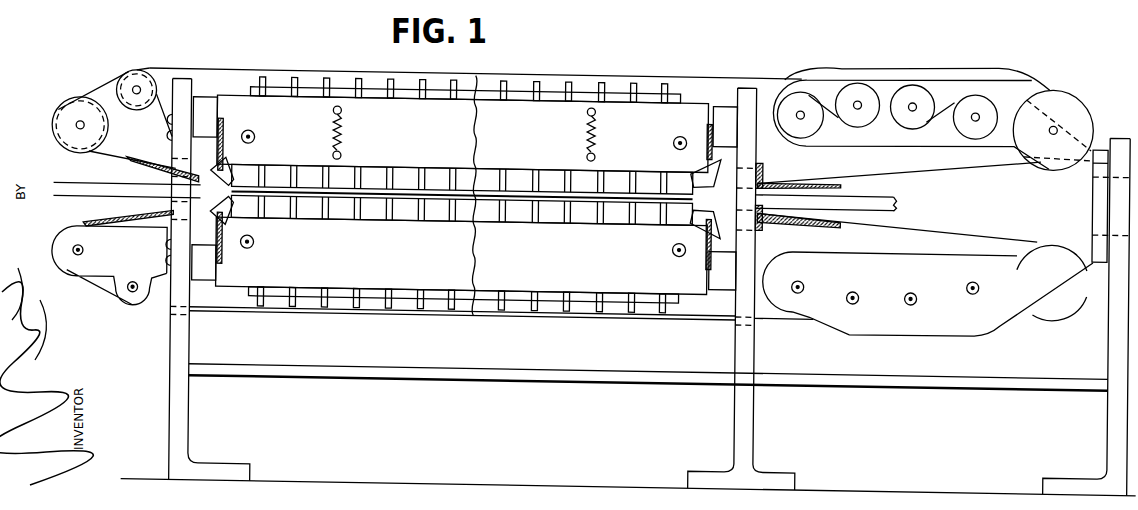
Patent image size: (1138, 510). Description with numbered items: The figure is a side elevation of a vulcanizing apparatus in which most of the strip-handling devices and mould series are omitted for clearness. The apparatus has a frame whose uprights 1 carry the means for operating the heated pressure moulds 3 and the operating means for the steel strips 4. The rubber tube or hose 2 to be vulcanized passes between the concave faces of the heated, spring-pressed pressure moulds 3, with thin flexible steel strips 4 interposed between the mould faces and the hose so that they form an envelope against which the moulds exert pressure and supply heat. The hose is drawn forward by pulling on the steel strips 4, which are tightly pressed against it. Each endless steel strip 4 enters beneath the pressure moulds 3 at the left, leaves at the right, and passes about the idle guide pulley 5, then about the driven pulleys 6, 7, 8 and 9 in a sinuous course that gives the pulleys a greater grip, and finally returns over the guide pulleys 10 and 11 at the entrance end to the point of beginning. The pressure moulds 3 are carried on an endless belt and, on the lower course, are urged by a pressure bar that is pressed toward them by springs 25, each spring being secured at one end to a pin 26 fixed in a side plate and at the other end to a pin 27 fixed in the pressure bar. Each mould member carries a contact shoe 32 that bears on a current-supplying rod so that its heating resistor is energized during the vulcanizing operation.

The uprights 1 is at (190, 422).
The rubber tube or hose 2 is at (101, 190).
The pressure moulds 3 is at (401, 185).
The steel strips 4 is at (193, 74).
The pulley 5 is at (1054, 130).
The pulley 6 is at (912, 107).
The pulley 7 is at (975, 117).
The pulley 8 is at (800, 115).
The pulley 9 is at (857, 105).
The guide pulley 10 is at (125, 79).
The guide pulley 11 is at (57, 114).
The springs 25 is at (341, 133).
The pin 26 is at (331, 158).
The pin 27 is at (331, 113).
The contact shoe 32 is at (381, 177).